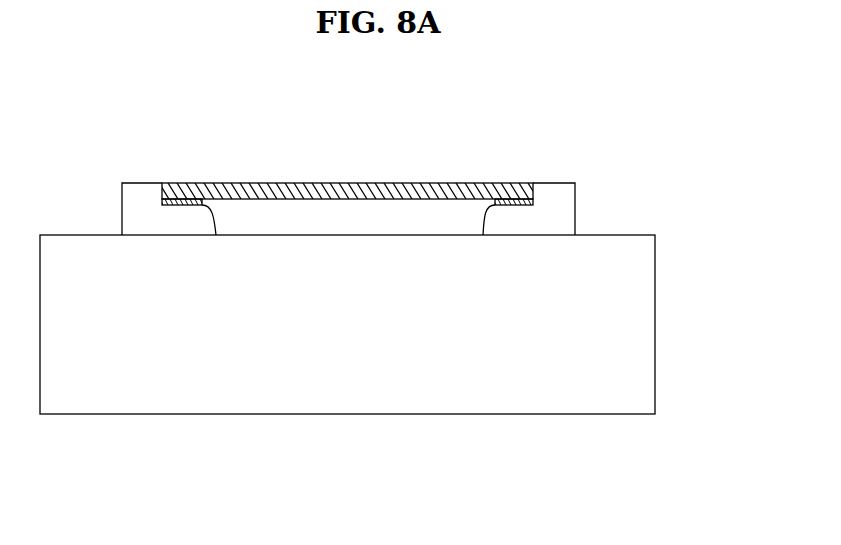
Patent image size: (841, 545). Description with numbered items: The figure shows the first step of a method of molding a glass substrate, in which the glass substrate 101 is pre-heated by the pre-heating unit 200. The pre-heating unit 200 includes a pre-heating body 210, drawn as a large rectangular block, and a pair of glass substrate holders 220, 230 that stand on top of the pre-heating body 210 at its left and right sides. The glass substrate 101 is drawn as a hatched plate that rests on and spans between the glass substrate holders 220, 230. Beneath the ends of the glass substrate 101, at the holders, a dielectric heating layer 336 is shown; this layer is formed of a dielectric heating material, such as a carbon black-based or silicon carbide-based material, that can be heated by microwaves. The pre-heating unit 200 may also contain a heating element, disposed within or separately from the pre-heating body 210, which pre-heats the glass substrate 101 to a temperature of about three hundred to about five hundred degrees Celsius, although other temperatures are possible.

The pre-heating unit 200 is at (78, 200).
The pre-heating body 210 is at (627, 327).
The glass substrate holder 220 is at (142, 192).
The glass substrate holder 230 is at (555, 192).
The glass substrate 101 is at (350, 190).
The dielectric heating layer 336 is at (192, 200).